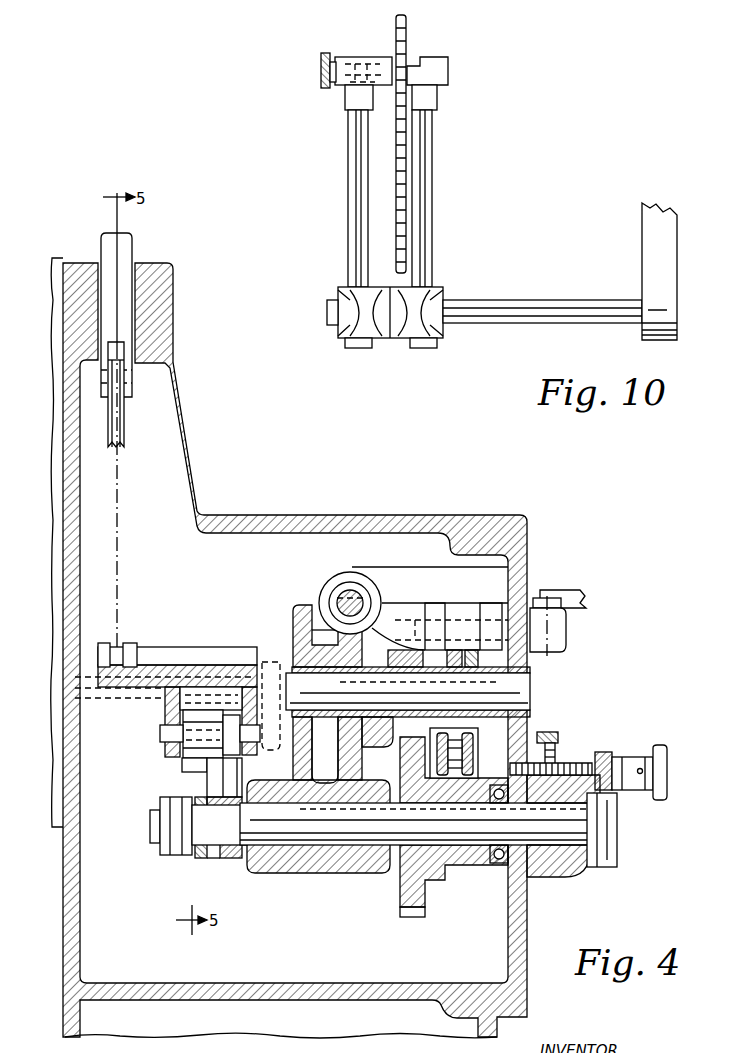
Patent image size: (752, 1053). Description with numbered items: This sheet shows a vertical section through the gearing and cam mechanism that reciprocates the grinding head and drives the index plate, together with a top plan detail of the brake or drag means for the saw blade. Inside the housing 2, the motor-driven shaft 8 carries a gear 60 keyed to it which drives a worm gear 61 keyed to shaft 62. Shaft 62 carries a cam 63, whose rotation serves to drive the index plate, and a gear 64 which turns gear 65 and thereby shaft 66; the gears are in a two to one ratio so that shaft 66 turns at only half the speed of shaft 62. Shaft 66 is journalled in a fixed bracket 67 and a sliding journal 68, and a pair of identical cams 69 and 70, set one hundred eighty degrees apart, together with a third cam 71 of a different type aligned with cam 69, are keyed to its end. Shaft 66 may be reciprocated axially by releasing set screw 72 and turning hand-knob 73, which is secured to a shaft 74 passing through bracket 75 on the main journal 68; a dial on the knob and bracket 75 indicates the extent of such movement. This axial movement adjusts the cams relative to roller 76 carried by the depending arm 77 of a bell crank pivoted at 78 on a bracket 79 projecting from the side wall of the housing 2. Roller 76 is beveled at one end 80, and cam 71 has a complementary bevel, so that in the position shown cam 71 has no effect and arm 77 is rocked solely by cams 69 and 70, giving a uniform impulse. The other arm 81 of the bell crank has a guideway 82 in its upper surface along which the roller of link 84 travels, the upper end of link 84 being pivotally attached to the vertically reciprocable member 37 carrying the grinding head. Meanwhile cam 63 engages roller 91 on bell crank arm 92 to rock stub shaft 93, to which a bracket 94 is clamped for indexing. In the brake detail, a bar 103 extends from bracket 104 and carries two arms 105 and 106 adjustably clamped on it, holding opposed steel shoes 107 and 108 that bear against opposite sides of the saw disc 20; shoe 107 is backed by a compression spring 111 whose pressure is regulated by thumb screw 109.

In FIG. 4, the housing 2 is at (70, 905).
In FIG. 4, the shaft 8 is at (345, 602).
In FIG. 4, the vertically reciprocable member 37 is at (132, 250).
In FIG. 4, the gear 60 is at (320, 602).
In FIG. 4, the worm gear 61 is at (318, 645).
In FIG. 4, the shaft 62 is at (518, 700).
In FIG. 4, the cam 63 is at (455, 650).
In FIG. 4, the gear 64 is at (352, 750).
In FIG. 4, the gear 65 is at (415, 889).
In FIG. 4, the shaft 66 is at (373, 832).
In FIG. 4, the fixed bracket 67 is at (320, 866).
In FIG. 4, the sliding journal 68 is at (548, 855).
In FIG. 4, the cam 69 is at (215, 775).
In FIG. 4, the cam 70 is at (192, 872).
In FIG. 4, the third cam 71 is at (228, 862).
In FIG. 4, the set screw 72 is at (550, 745).
In FIG. 4, the hand-knob 73 is at (666, 760).
In FIG. 4, the shaft 74 is at (612, 762).
In FIG. 4, the bracket 75 is at (600, 752).
In FIG. 4, the roller 76 is at (195, 721).
In FIG. 4, the depending arm 77 is at (175, 745).
In FIG. 4, the pivot 78 is at (75, 690).
In FIG. 4, the bracket 79 is at (75, 660).
In FIG. 4, the beveled end 80 is at (240, 715).
In FIG. 4, the bell crank arm 81 is at (165, 645).
In FIG. 4, the guideway 82 is at (115, 640).
In FIG. 4, the link 84 is at (110, 428).
In FIG. 4, the roller 91 is at (474, 764).
In FIG. 4, the bell crank arm 92 is at (474, 743).
In FIG. 4, the stub shaft 93 is at (568, 636).
In FIG. 4, the bracket 94 is at (586, 600).
In FIG. 10, the saw disc 20 is at (401, 50).
In FIG. 10, the bar 103 is at (530, 302).
In FIG. 10, the bracket 104 is at (664, 266).
In FIG. 10, the arm 105 is at (348, 179).
In FIG. 10, the arm 106 is at (422, 184).
In FIG. 10, the steel shoe 107 is at (392, 68).
In FIG. 10, the steel shoe 108 is at (408, 76).
In FIG. 10, the thumb screw 109 is at (321, 80).
In FIG. 10, the compression spring 111 is at (356, 55).